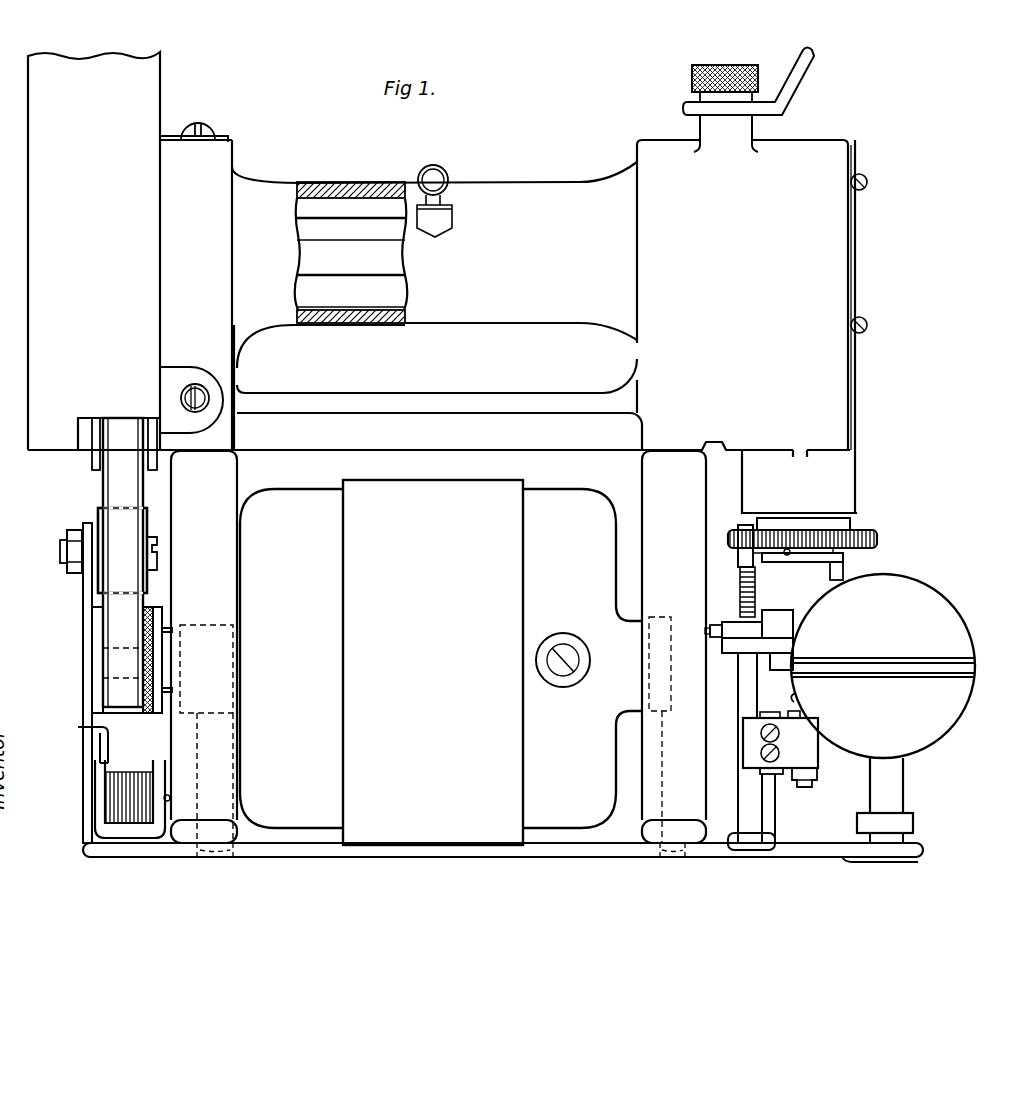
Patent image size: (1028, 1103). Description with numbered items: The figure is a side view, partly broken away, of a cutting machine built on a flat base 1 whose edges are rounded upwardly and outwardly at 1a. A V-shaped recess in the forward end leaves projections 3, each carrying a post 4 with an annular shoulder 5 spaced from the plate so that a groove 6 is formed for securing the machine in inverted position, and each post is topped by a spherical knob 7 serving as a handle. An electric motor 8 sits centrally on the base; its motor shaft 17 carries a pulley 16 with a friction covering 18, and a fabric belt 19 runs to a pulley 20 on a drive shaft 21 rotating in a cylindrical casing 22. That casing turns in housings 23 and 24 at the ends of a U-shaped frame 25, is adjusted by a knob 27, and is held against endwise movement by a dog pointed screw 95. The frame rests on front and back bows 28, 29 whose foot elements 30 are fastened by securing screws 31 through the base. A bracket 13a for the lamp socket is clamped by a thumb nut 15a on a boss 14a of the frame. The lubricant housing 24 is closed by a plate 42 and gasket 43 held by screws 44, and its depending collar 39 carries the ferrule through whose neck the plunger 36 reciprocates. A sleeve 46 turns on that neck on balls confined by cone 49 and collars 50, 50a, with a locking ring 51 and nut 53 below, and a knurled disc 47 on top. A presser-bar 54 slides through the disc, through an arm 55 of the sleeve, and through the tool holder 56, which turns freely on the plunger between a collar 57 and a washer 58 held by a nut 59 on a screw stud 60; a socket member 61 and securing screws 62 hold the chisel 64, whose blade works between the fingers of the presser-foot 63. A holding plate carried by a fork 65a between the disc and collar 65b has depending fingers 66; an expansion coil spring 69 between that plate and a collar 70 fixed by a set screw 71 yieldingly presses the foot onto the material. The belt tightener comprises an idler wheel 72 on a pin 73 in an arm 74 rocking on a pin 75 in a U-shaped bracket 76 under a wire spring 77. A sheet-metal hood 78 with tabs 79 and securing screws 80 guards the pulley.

The base 1 is at (378, 842).
The rounded edges 1a is at (84, 853).
The projections 3 is at (845, 860).
The post 4 is at (905, 792).
The annular collar or shoulder 5 is at (914, 818).
The groove or space 6 is at (906, 839).
The knob 7 is at (940, 618).
The electric motor 8 is at (433, 662).
The bracket 13a is at (812, 73).
The boss 14a is at (760, 129).
The thumb nut 15a is at (690, 74).
The pulley 16 is at (95, 633).
The motor shaft 17 is at (183, 625).
The covering 18 is at (100, 622).
The fabric belt 19 is at (122, 485).
The pulley 20 is at (92, 464).
The drive shaft 21 is at (380, 259).
The cylindrical casing 22 is at (515, 188).
The housing 23 is at (266, 165).
The housing 24 is at (742, 295).
The U-shaped frame 25 is at (432, 393).
The knob or handle 27 is at (433, 165).
The front bow 28 is at (645, 522).
The back bow 29 is at (233, 588).
The foot elements 30 is at (212, 823).
The securing screws 31 is at (222, 852).
The plunger 36 is at (797, 696).
The collar 39 is at (840, 470).
The plate 42 is at (852, 237).
The gasket 43 is at (850, 263).
The screws 44 is at (868, 181).
The sleeve 46 is at (838, 581).
The disc 47 is at (880, 540).
The cone 49 is at (845, 514).
The collar 50 is at (855, 527).
The collar 50a is at (785, 618).
The locking ring 51 is at (770, 660).
The nut 53 is at (790, 668).
The presser-bar 54 is at (755, 685).
The arm 55 is at (735, 650).
The tool holder 56 is at (750, 727).
The collar 57 is at (815, 722).
The washer 58 is at (800, 762).
The nut 59 is at (785, 775).
The screw stud 60 is at (808, 788).
The socket member 61 is at (766, 770).
The securing screws 62 is at (790, 743).
The presser-foot 63 is at (740, 852).
The chisel 64 is at (777, 827).
The fork 65a is at (788, 548).
The collar 65b is at (846, 563).
The depending finger 66 is at (736, 557).
The expansion coil spring 69 is at (738, 580).
The collar 70 is at (735, 622).
The set screw 71 is at (710, 630).
The idler wheel 72 is at (98, 517).
The pin 73 is at (62, 553).
The arm 74 is at (85, 675).
The pin 75 is at (95, 793).
The U-shaped bracket 76 is at (97, 768).
The wire spring 77 is at (108, 732).
The hood or guard 78 is at (94, 251).
The tabs 79 is at (230, 139).
The securing screws 80 is at (180, 397).
The dog pointed screw 95 is at (197, 124).